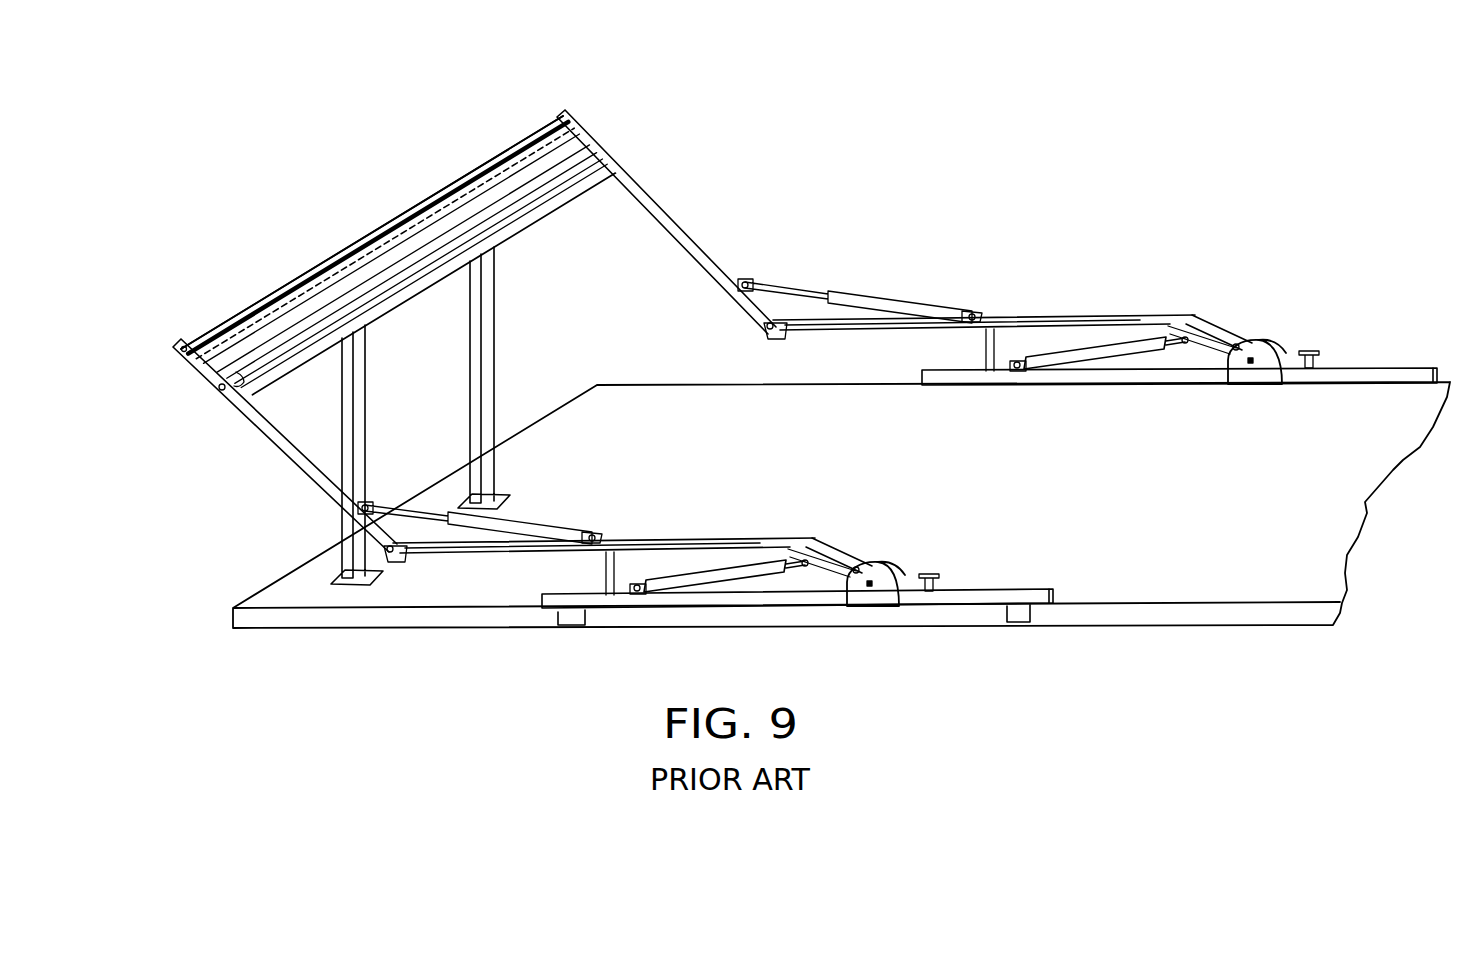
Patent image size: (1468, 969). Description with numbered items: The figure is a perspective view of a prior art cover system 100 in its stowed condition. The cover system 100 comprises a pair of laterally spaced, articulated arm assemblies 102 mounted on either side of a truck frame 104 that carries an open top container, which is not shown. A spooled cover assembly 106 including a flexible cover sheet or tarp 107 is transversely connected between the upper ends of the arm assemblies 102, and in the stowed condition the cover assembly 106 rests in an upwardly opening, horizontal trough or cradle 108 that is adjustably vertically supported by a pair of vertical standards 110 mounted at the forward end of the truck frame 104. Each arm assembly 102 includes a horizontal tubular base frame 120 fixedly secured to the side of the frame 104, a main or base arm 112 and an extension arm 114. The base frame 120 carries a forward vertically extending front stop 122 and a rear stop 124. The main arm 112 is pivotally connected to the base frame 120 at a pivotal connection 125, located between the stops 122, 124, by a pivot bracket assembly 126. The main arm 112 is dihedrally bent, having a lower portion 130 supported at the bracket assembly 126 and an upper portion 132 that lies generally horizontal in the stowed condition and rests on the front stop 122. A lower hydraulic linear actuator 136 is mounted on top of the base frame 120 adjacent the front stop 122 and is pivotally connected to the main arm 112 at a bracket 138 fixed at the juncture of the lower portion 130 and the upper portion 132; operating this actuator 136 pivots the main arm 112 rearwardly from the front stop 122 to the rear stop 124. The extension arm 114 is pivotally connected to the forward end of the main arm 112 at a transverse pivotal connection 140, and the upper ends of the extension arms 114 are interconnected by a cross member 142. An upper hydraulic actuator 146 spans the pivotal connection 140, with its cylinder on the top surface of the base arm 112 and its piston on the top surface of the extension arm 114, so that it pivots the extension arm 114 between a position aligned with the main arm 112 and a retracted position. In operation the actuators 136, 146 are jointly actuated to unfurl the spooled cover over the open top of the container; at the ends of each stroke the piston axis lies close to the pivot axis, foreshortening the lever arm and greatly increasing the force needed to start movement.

The prior art cover system 100 is at (701, 152).
The articulated arm assembly 102 is at (1183, 246).
The truck frame 104 is at (281, 620).
The spooled cover assembly 106 is at (276, 337).
The flexible cover sheet or tarp 107 is at (502, 233).
The trough or cradle 108 is at (402, 246).
The vertical standard 110 is at (472, 382).
The main or base arm 112 is at (1195, 312).
The extension arm 114 is at (688, 222).
The horizontal tubular base frame 120 is at (1025, 380).
The front stop 122 is at (990, 348).
The rear stop 124 is at (1323, 357).
The pivotal connection 125 is at (1256, 358).
The pivot bracket assembly 126 is at (1250, 388).
The lower portion 130 is at (1228, 330).
The upper portion 132 is at (1037, 318).
The lower hydraulic linear actuator 136 is at (1100, 380).
The bracket 138 is at (862, 548).
The transverse pivotal connection 140 is at (762, 330).
The cross member 142 is at (477, 176).
The upper hydraulic actuator 146 is at (860, 293).